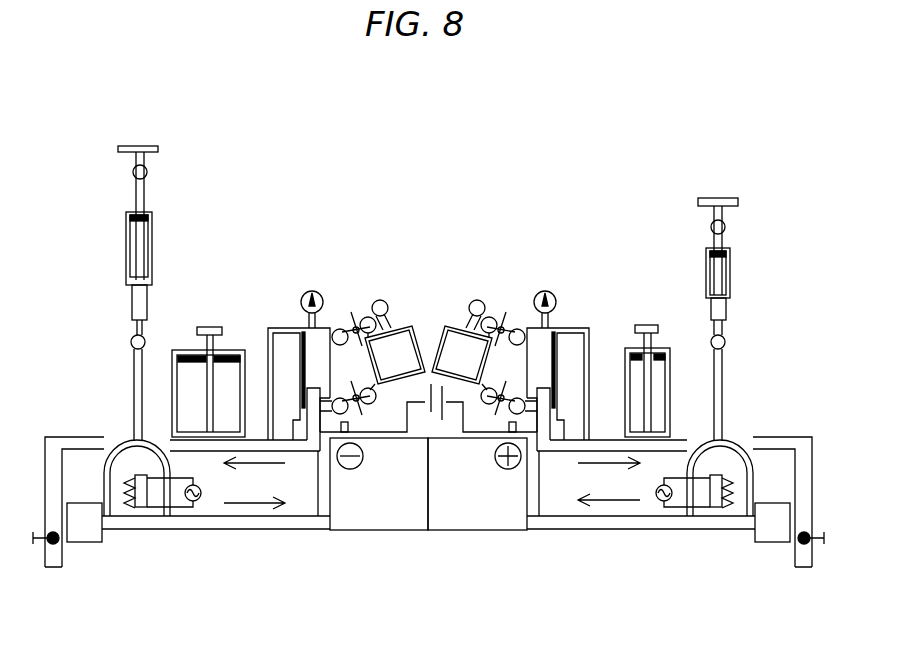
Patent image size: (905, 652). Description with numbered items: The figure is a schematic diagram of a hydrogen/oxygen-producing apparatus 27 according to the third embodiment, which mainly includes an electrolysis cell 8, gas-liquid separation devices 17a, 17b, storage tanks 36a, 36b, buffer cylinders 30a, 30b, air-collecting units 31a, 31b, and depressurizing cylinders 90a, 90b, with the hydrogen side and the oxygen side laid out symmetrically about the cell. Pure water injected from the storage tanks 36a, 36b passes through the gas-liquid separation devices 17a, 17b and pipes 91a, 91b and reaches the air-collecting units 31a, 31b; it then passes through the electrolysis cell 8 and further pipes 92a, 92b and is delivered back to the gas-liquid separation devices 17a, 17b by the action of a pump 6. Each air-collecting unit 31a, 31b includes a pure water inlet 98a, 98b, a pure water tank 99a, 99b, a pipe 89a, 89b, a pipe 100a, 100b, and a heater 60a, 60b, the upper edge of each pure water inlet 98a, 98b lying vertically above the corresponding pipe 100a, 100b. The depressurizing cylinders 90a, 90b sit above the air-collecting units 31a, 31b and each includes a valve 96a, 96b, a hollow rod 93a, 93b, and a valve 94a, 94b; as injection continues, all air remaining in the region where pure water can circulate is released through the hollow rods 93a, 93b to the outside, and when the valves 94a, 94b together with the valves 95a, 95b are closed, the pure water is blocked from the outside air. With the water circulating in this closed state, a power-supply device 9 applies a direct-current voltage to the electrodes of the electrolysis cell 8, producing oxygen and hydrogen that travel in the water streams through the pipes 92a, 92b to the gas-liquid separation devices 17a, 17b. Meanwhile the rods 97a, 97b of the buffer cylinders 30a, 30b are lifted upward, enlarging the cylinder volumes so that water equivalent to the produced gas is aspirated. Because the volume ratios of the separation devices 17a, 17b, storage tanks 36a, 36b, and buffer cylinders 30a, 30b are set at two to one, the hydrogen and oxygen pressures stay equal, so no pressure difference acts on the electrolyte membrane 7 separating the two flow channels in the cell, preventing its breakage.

The pump 6 is at (85, 540).
The electrolyte membrane 7 is at (428, 513).
The electrolysis cell 8 is at (478, 532).
The power-supply device 9 is at (436, 385).
The gas-liquid separation device 17a is at (313, 332).
The gas-liquid separation device 17b is at (548, 330).
The hydrogen/oxygen-producing apparatus 27 is at (385, 131).
The buffer cylinder 30a is at (177, 395).
The buffer cylinder 30b is at (669, 355).
The air-collecting unit 31a is at (148, 518).
The air-collecting unit 31b is at (697, 515).
The storage tank 36a is at (393, 330).
The storage tank 36b is at (453, 347).
The heater 60a is at (197, 502).
The heater 60b is at (660, 499).
The pipe 89a is at (133, 417).
The pipe 89b is at (723, 385).
The depressurizing cylinder 90a is at (148, 280).
The depressurizing cylinder 90b is at (731, 278).
The pipe 91a is at (253, 437).
The pipe 91b is at (603, 447).
The pipe 92a is at (318, 452).
The pipe 92b is at (535, 452).
The hollow rod 93a is at (136, 198).
The hollow rod 93b is at (713, 243).
The valve 94a is at (141, 167).
The valve 94b is at (715, 222).
The valve 95a is at (378, 300).
The valve 95b is at (478, 298).
The valve 96a is at (132, 341).
The valve 96b is at (722, 340).
The rod 97a is at (209, 325).
The rod 97b is at (645, 325).
The pure water inlet 98a is at (135, 477).
The pure water inlet 98b is at (722, 470).
The pure water tank 99a is at (137, 452).
The pure water tank 99b is at (715, 450).
The pipe 100a is at (240, 522).
The pipe 100b is at (627, 525).